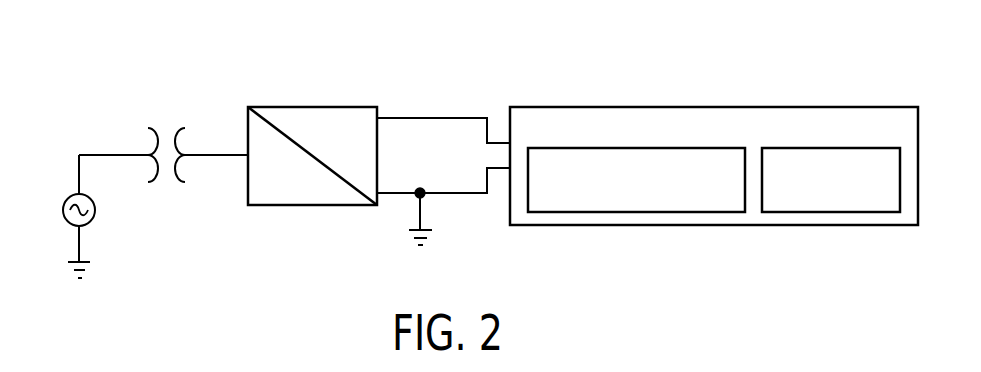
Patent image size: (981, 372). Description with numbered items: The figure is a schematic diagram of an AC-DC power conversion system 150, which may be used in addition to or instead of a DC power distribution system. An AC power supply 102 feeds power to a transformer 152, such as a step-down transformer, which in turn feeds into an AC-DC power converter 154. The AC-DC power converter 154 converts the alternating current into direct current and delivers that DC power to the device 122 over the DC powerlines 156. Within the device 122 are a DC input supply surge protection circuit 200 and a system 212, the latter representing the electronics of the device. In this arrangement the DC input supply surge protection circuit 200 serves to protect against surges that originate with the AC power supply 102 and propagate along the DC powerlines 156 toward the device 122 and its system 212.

The AC-DC power conversion system 150 is at (818, 45).
The AC power supply 102 is at (91, 222).
The transformer 152 is at (152, 127).
The AC-DC power converter 154 is at (273, 206).
The DC powerlines 156 is at (420, 117).
The device 122 is at (703, 106).
The DC input supply surge protection circuit 200 is at (640, 213).
The system 212 is at (832, 213).